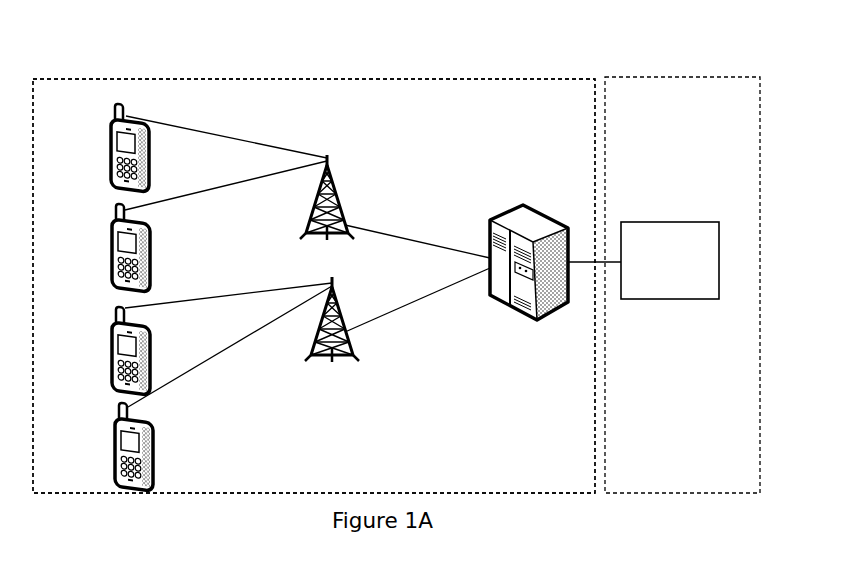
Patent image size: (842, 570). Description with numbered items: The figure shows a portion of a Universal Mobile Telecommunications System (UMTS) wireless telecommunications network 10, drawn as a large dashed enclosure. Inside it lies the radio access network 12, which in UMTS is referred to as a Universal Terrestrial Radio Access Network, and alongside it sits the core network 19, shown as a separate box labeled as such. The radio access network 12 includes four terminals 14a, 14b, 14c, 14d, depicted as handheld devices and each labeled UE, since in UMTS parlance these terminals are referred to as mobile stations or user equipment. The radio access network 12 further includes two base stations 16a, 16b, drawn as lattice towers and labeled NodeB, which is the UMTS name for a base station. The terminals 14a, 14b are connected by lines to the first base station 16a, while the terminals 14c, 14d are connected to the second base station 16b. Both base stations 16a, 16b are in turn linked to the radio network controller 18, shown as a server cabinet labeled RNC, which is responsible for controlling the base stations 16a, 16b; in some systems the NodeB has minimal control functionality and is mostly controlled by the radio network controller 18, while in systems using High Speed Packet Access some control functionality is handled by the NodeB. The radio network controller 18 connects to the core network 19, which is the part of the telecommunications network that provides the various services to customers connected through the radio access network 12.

The UMTS wireless telecommunications network 10 is at (390, 42).
The radio access network 12 is at (314, 286).
The terminal 14a is at (111, 142).
The terminal 14b is at (112, 245).
The terminal 14c is at (112, 337).
The terminal 14d is at (115, 443).
The base station 16a is at (343, 212).
The base station 16b is at (343, 308).
The radio network controller 18 is at (553, 227).
The core network 19 is at (670, 260).